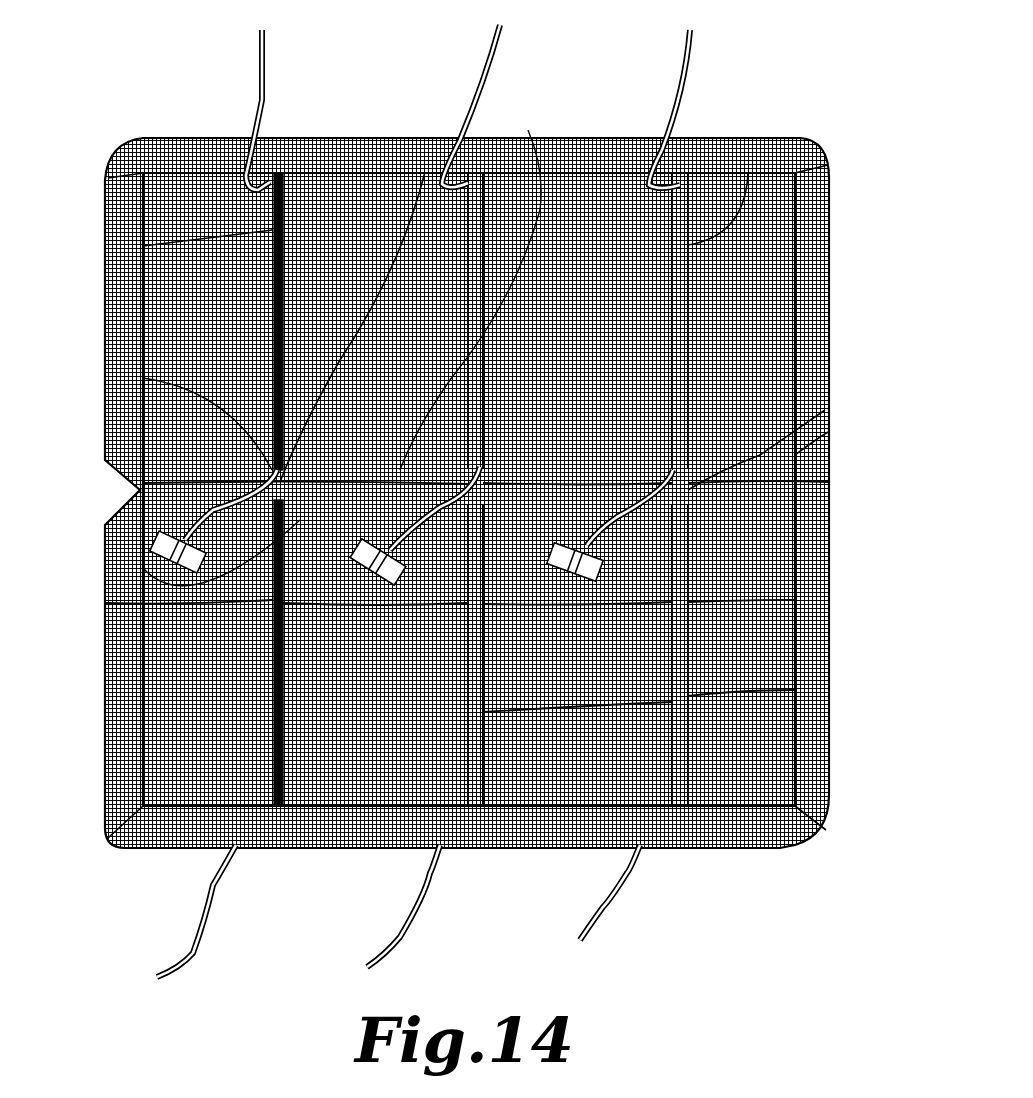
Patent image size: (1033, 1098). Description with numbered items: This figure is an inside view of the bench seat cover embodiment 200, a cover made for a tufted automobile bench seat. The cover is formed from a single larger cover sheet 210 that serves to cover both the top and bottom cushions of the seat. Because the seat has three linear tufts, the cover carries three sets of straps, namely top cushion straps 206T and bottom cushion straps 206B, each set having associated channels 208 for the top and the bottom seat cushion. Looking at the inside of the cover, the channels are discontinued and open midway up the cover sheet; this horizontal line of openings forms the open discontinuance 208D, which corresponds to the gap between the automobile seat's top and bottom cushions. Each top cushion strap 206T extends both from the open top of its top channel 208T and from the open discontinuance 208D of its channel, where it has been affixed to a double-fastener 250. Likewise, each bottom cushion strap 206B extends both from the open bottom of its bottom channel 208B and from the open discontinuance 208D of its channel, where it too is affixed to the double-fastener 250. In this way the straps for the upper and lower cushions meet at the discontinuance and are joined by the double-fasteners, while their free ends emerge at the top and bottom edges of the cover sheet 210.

The bench seat cover embodiment 200 is at (772, 864).
The top cushion strap 206T is at (266, 88).
The bottom cushion strap 206B is at (197, 936).
The channel 208 is at (748, 173).
The top channel 208T is at (305, 172).
The bottom channel 208B is at (232, 848).
The open discontinuance 208D is at (425, 172).
The double-fastener 250 is at (75, 568).
The cover sheet 210 is at (829, 748).